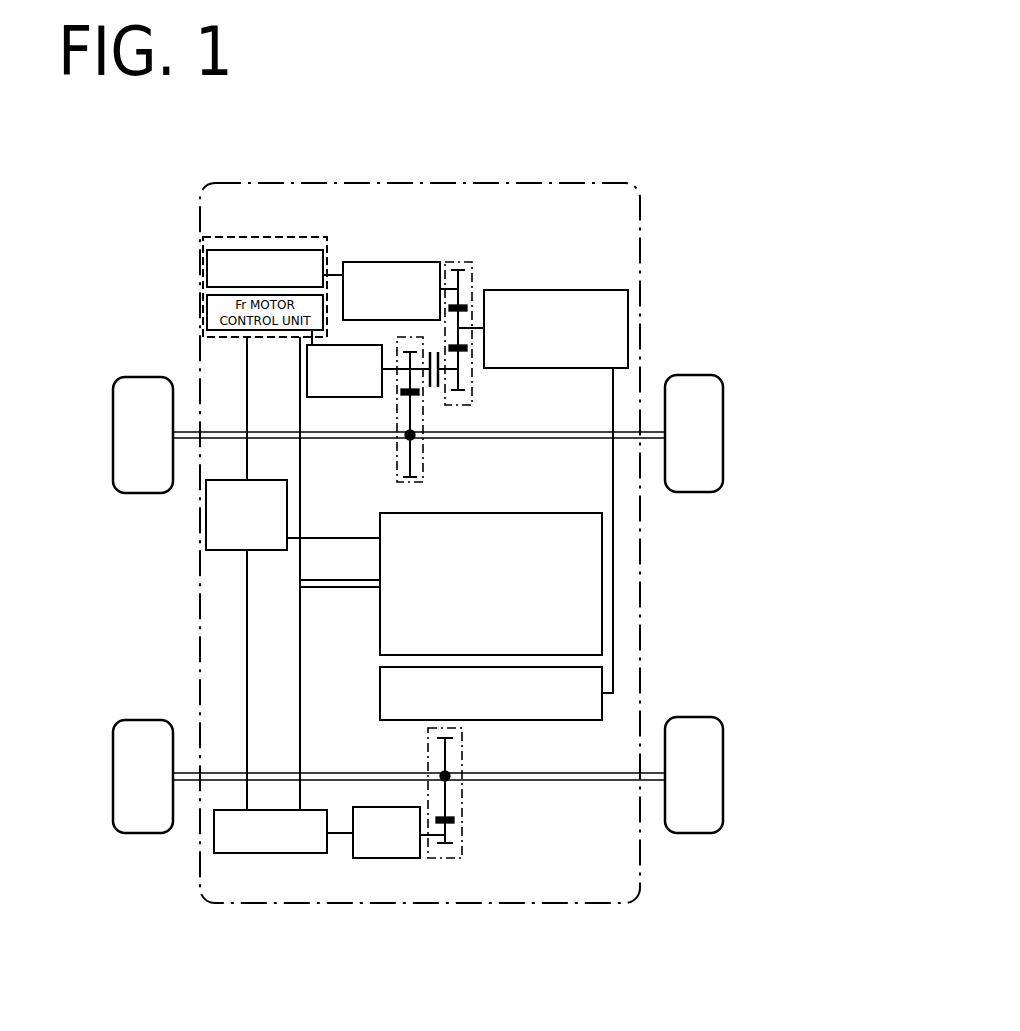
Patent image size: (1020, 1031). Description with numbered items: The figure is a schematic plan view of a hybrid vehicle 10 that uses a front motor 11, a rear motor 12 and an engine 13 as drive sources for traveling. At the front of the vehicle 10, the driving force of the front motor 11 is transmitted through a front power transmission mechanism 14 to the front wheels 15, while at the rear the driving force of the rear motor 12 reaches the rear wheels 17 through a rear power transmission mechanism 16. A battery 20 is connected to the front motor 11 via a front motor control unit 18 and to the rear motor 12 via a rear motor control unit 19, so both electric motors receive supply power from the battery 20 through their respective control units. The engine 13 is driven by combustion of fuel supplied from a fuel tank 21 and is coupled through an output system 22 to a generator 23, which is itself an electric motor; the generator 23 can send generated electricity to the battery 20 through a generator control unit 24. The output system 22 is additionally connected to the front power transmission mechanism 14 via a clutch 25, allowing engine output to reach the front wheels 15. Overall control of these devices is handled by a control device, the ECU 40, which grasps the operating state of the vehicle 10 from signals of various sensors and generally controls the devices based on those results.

The vehicle 10 is at (738, 198).
The front motor 11 is at (307, 358).
The rear motor 12 is at (385, 860).
The engine 13 is at (628, 303).
The front power transmission mechanism 14 is at (393, 448).
The front wheels 15 is at (112, 410).
The rear power transmission mechanism 16 is at (463, 805).
The rear wheels 17 is at (123, 753).
The front motor control unit 18 is at (203, 305).
The rear motor control unit 19 is at (212, 838).
The battery 20 is at (378, 628).
The fuel tank 21 is at (542, 720).
The output system 22 is at (472, 280).
The generator 23 is at (357, 258).
The generator control unit 24 is at (202, 267).
The clutch 25 is at (435, 392).
The control device (ECU) 40 is at (200, 523).